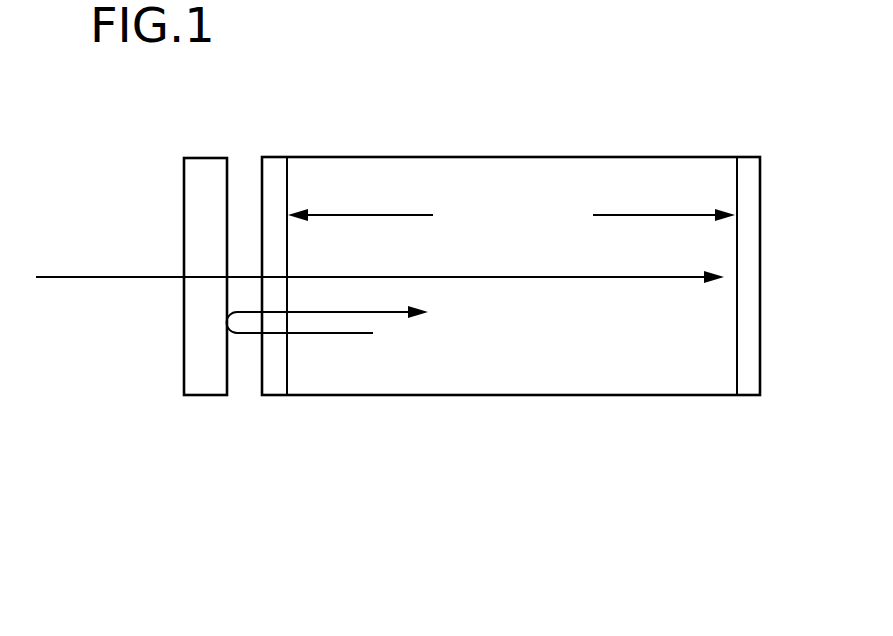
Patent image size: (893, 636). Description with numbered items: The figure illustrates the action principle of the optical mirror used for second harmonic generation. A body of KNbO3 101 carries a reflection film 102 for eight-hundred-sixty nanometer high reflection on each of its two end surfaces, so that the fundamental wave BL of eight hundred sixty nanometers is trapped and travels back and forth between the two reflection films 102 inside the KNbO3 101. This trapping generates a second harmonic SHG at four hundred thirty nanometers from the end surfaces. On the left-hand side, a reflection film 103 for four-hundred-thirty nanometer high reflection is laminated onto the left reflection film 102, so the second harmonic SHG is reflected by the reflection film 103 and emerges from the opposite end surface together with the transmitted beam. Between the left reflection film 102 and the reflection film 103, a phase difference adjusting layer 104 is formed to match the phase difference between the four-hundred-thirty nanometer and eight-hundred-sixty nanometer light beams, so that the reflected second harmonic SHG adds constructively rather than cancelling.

The KNbO3 crystal 101 is at (532, 157).
The reflection film for 860 nmHR 102 is at (276, 168).
The reflection film for 430 nmHR 103 is at (200, 172).
The phase difference adjusting layer 104 is at (247, 385).
The fundamental wave BL is at (386, 215).
The second harmonic SHG is at (393, 313).